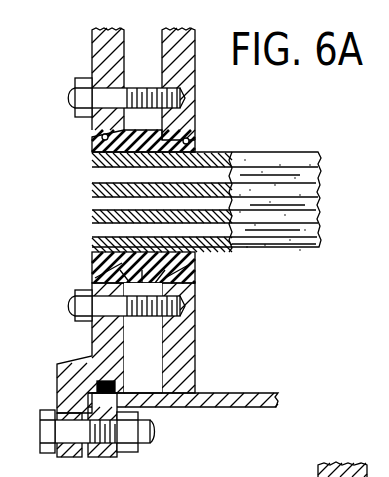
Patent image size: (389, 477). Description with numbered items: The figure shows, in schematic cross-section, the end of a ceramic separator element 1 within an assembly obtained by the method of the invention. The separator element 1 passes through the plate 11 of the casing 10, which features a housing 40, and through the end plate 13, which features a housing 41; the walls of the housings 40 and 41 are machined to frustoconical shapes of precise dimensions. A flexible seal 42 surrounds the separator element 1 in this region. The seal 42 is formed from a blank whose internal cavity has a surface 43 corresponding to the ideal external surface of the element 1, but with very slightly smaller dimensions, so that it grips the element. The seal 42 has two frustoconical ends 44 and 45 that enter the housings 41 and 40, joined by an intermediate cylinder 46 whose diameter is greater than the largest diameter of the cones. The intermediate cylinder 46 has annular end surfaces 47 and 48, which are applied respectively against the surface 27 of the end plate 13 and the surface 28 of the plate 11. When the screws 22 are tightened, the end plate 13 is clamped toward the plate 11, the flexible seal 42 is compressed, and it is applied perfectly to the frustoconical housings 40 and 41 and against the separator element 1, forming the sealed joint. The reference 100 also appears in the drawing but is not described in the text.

The separator element 1 is at (283, 183).
The casing 10 is at (210, 414).
The plate 11 is at (182, 78).
The end plate 13 is at (108, 63).
The screws 22 is at (83, 98).
The surface 27 is at (127, 42).
The surface 28 is at (162, 43).
The housing 40 is at (193, 140).
The housing 41 is at (108, 135).
The seal 42 is at (125, 246).
The surface of the internal cavity 43 is at (143, 158).
The frustoconical end 44 is at (100, 273).
The frustoconical end 45 is at (193, 277).
The intermediate cylinder 46 is at (140, 314).
The annular end surface 47 is at (88, 320).
The annular end surface 48 is at (165, 283).
The laminate 100 is at (213, 177).